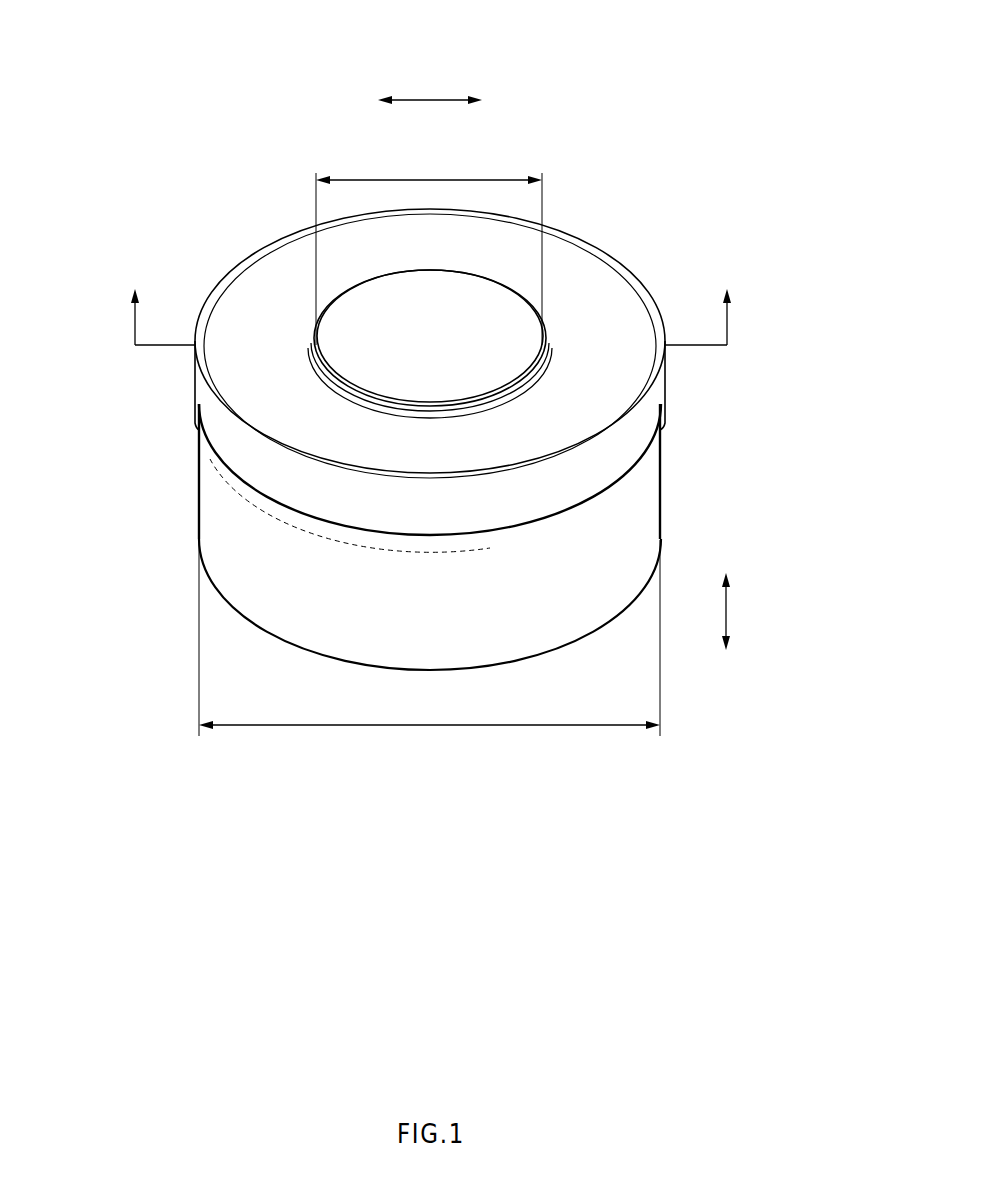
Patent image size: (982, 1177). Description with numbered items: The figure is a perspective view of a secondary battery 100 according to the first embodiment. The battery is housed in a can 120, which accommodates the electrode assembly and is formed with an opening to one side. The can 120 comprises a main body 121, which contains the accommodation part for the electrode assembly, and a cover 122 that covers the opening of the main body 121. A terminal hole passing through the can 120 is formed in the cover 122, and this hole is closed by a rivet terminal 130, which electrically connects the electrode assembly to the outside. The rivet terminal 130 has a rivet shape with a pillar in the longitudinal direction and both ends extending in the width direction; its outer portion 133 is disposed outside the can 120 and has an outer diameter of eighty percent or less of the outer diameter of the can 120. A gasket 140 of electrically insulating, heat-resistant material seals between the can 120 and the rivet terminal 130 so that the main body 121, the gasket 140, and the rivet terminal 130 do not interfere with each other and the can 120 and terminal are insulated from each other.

The secondary battery 100 is at (787, 43).
The can 120 is at (100, 388).
The main body 121 is at (215, 491).
The cover 122 is at (237, 370).
The rivet terminal 130 is at (496, 373).
The outer portion 133 is at (513, 344).
The gasket 140 is at (545, 331).